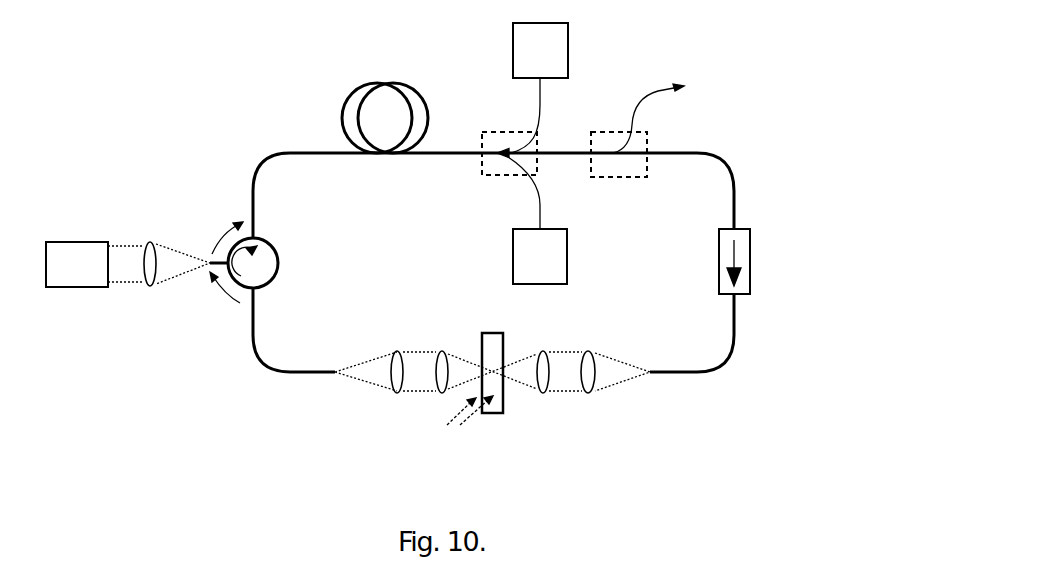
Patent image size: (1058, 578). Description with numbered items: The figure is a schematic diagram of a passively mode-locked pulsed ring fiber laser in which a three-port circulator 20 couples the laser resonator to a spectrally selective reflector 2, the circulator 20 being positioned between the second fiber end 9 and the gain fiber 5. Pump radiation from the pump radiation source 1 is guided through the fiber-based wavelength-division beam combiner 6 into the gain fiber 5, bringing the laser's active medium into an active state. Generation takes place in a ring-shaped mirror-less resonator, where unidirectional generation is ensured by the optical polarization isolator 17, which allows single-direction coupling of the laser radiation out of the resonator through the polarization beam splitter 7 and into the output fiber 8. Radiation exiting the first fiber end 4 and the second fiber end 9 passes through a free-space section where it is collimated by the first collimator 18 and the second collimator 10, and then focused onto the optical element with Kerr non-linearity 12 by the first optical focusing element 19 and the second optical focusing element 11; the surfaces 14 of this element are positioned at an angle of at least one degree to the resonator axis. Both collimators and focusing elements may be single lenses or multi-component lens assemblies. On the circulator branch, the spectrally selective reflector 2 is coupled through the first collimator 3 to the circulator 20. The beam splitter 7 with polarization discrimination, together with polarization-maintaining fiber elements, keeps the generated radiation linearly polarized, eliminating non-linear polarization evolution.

The pump radiation source 1 is at (532, 153).
The spectrally selective reflector 2 is at (95, 264).
The first collimator 3 is at (186, 247).
The first fiber end 4 is at (631, 362).
The gain fiber 5 is at (385, 118).
The fiber-based wavelength-division beam combiner 6 is at (509, 135).
The polarization beam splitter 7 is at (619, 135).
The output fiber 8 is at (648, 103).
The second fiber end 9 is at (358, 360).
The second collimator 10 is at (405, 355).
The second optical focusing element 11 is at (480, 355).
The optical element with Kerr non-linearity 12 is at (502, 357).
The surfaces of the optical element with Kerr non-linearity 14 is at (463, 427).
The optical polarization isolator 17 is at (705, 261).
The first collimator 18 is at (600, 355).
The first optical focusing element 19 is at (559, 355).
The three-port circulator 20 is at (269, 262).